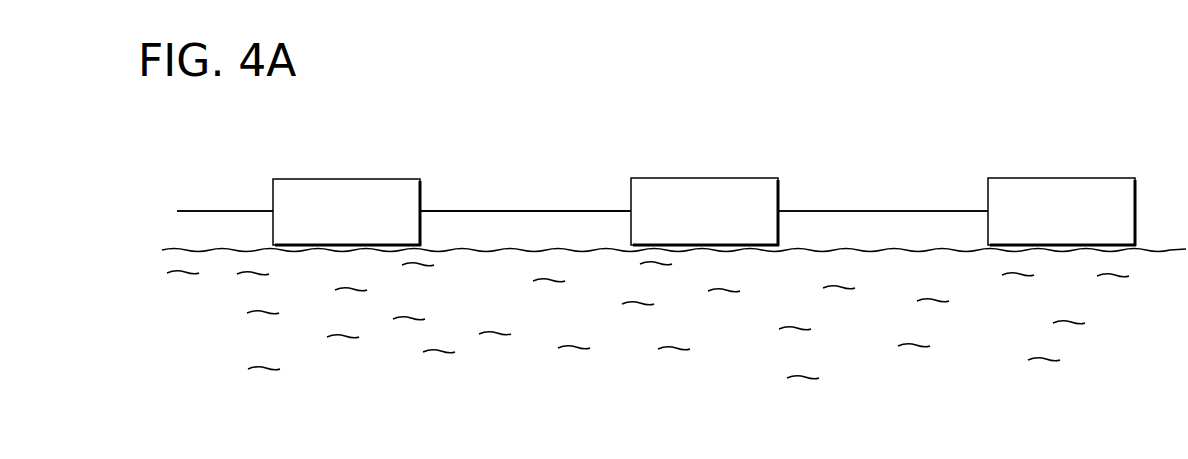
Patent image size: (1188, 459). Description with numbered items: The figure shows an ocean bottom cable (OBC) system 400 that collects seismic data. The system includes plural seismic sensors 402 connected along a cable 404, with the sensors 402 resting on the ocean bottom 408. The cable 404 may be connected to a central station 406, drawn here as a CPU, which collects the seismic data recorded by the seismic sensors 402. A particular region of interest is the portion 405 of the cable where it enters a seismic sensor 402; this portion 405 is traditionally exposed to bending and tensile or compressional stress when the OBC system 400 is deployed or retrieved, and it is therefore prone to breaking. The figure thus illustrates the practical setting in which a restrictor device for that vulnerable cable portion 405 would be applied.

The ocean bottom cable system 400 is at (728, 100).
The seismic sensor 402 is at (328, 179).
The cable 404 is at (517, 210).
The portion of the cable 405 is at (445, 211).
The central station 406 is at (1050, 178).
The ocean bottom 408 is at (495, 312).